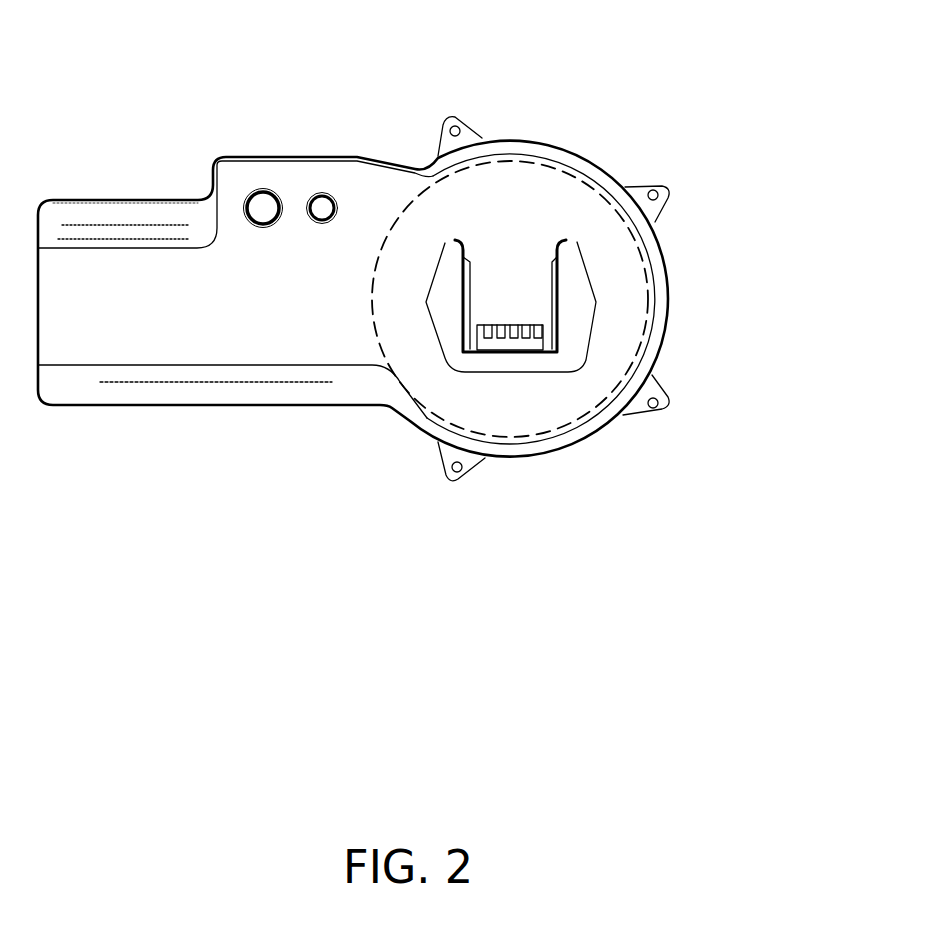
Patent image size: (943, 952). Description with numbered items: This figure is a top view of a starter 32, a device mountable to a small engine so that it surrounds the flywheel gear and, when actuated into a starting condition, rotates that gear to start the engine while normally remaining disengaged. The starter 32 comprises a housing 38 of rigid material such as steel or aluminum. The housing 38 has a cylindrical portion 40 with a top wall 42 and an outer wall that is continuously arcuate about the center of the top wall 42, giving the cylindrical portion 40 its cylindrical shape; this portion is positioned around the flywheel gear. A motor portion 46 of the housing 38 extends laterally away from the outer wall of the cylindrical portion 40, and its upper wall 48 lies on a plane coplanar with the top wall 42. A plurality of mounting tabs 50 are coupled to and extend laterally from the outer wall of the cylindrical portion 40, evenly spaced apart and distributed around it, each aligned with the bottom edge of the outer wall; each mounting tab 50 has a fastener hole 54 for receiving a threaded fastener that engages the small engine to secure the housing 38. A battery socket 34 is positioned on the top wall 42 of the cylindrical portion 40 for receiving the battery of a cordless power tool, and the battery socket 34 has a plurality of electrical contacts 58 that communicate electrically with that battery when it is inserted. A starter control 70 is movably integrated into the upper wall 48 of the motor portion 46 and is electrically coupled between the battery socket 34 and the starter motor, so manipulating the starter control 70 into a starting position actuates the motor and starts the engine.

The starter 32 is at (305, 128).
The battery socket 34 is at (587, 328).
The housing 38 is at (408, 425).
The cylindrical portion 40 is at (684, 298).
The top wall 42 is at (530, 190).
The motor portion 46 is at (278, 432).
The upper wall 48 is at (143, 313).
The mounting tabs 50 is at (478, 126).
The fastener hole 54 is at (446, 132).
The electrical contacts 58 is at (508, 335).
The starter control 70 is at (277, 183).